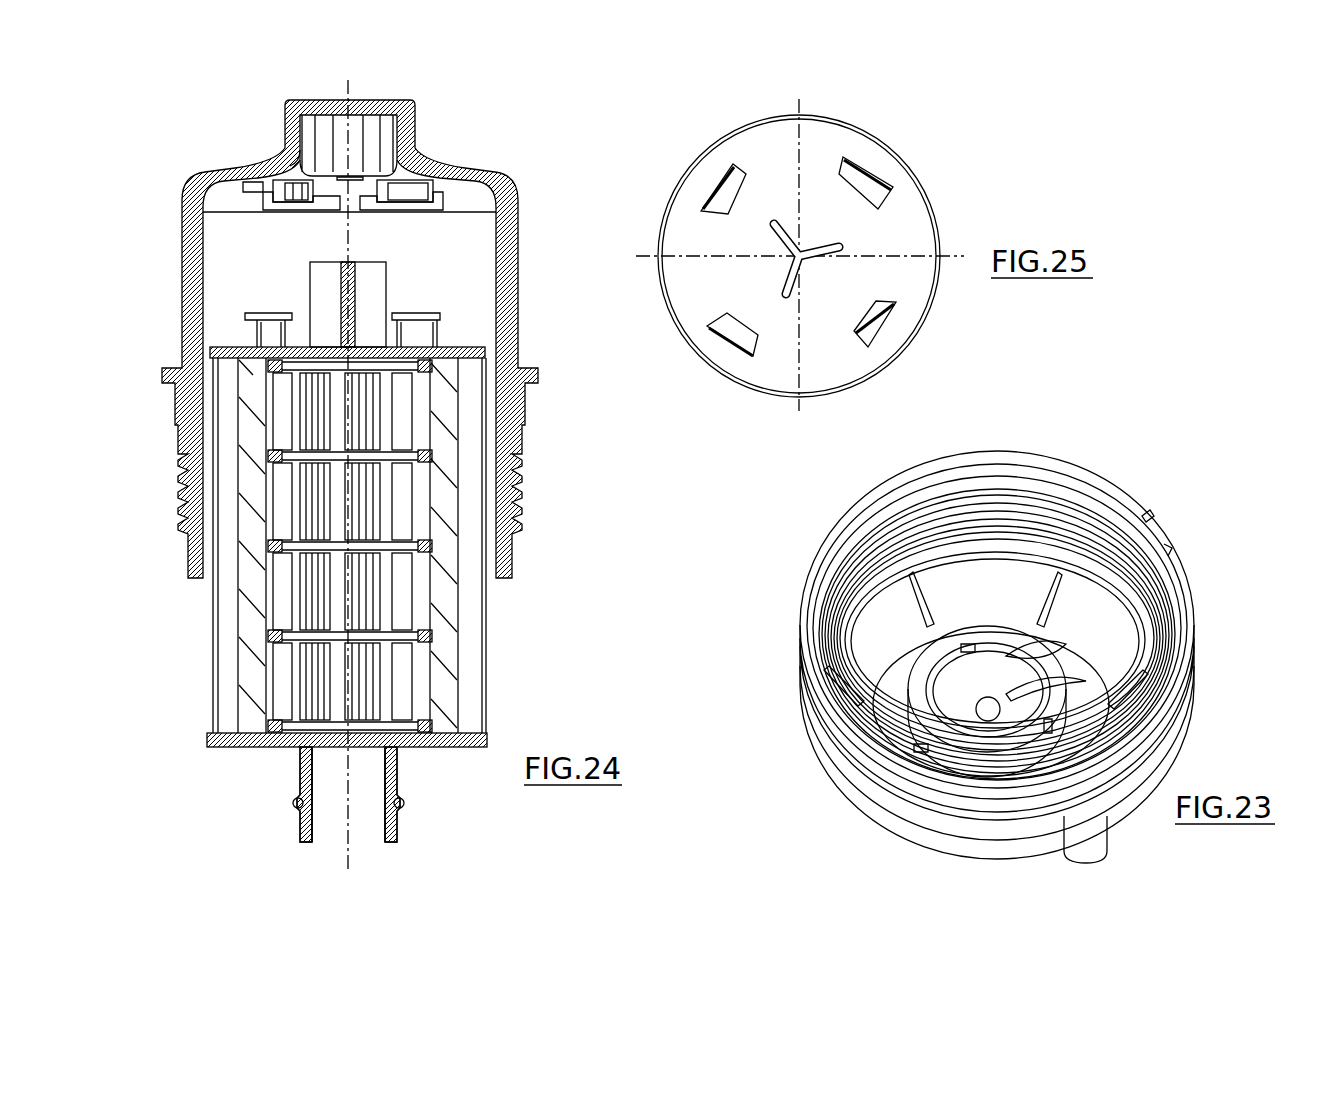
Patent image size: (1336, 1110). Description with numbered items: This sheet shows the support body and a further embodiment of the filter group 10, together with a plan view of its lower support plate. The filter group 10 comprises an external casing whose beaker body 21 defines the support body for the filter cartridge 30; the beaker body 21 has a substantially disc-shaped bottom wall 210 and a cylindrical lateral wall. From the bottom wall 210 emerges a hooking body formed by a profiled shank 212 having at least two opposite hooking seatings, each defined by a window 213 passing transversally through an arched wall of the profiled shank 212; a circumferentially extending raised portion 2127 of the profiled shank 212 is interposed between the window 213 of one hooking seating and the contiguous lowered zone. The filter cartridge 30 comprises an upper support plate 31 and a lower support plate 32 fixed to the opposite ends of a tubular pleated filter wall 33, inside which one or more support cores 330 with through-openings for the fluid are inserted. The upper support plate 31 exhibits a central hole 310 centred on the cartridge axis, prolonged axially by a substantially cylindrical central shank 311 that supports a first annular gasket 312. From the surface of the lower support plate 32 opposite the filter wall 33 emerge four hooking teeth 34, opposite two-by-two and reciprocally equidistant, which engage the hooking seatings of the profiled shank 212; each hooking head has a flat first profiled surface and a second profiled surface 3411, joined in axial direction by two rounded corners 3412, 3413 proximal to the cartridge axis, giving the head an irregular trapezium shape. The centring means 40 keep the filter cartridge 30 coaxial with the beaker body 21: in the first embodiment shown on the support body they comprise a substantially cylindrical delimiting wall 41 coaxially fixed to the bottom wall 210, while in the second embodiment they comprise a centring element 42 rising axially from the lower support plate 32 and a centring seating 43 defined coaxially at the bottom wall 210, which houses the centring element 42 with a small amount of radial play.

In FIG. 24, the filter group 10 is at (137, 160).
In FIG. 24, the beaker body 21 is at (183, 260).
In FIG. 23, the beaker body 21 is at (1066, 443).
In FIG. 24, the bottom wall 210 is at (485, 196).
In FIG. 23, the bottom wall 210 is at (1000, 745).
In FIG. 24, the profiled shank 212 is at (287, 212).
In FIG. 23, the profiled shank 212 is at (988, 643).
In FIG. 23, the raised portion 2127 is at (1080, 677).
In FIG. 24, the window 213 is at (288, 190).
In FIG. 23, the window 213 is at (1046, 720).
In FIG. 24, the filter cartridge 30 is at (495, 530).
In FIG. 25, the filter cartridge 30 is at (631, 173).
In FIG. 24, the upper support plate 31 is at (240, 748).
In FIG. 24, the central hole 310 is at (357, 742).
In FIG. 24, the central shank 311 is at (300, 770).
In FIG. 24, the first annular gasket 312 is at (402, 806).
In FIG. 24, the lower support plate 32 is at (530, 372).
In FIG. 25, the lower support plate 32 is at (795, 145).
In FIG. 24, the filter wall 33 is at (443, 548).
In FIG. 24, the support core 330 is at (432, 637).
In FIG. 24, the hooking teeth 34 is at (250, 317).
In FIG. 25, the hooking teeth 34 is at (716, 345).
In FIG. 25, the second profiled surface 3411 is at (720, 166).
In FIG. 25, the corner 3412 is at (838, 166).
In FIG. 25, the corner 3413 is at (866, 192).
In FIG. 24, the centring means 40 is at (402, 228).
In FIG. 25, the centring means 40 is at (832, 226).
In FIG. 23, the centring means 40 is at (1054, 642).
In FIG. 23, the delimiting wall 41 is at (1025, 640).
In FIG. 24, the centring element 42 is at (370, 285).
In FIG. 25, the centring element 42 is at (812, 253).
In FIG. 24, the centring seating 43 is at (370, 137).